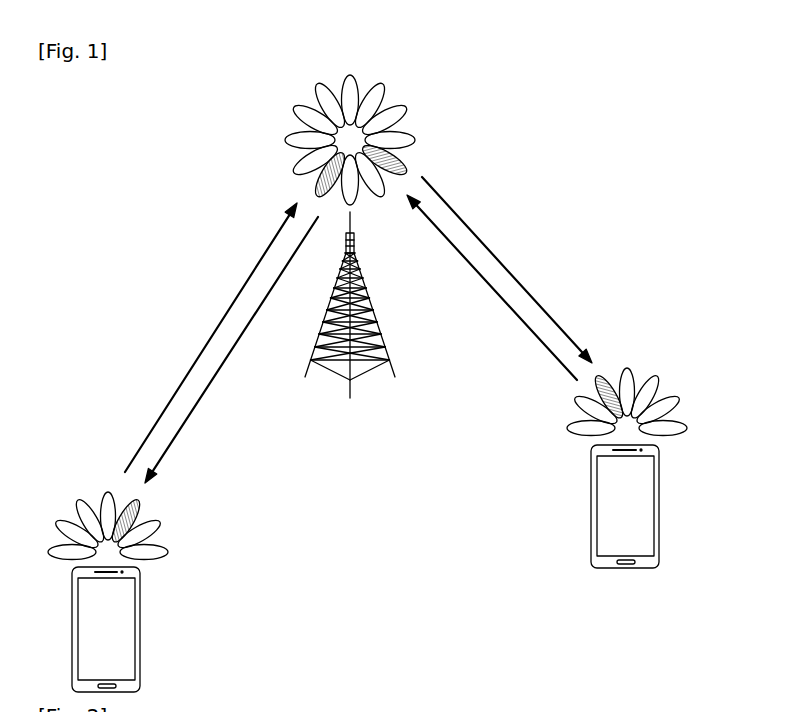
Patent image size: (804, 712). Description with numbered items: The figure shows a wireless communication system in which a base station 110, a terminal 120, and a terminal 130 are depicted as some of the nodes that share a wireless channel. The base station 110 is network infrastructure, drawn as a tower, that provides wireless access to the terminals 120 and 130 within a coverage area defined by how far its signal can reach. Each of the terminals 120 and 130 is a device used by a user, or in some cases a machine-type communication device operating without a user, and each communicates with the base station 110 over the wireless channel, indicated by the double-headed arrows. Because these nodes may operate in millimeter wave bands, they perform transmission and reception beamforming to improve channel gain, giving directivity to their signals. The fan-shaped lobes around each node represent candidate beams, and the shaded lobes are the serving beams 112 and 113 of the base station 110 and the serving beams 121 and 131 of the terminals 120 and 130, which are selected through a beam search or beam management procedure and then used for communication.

The base station 110 is at (369, 297).
The serving beam 112 is at (313, 187).
The serving beam 113 is at (405, 166).
The terminal 120 is at (141, 600).
The serving beam 121 is at (140, 501).
The terminal 130 is at (660, 478).
The serving beam 131 is at (595, 390).